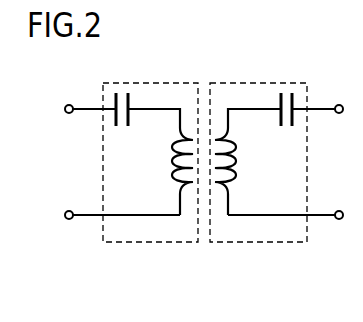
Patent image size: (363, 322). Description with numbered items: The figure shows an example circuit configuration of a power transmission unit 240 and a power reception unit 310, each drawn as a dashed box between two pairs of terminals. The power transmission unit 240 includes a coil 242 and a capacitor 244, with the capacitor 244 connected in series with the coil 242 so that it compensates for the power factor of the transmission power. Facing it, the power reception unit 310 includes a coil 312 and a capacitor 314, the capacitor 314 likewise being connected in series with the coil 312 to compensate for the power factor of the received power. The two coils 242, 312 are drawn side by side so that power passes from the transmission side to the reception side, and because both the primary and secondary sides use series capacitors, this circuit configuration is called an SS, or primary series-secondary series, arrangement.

The power transmission unit 240 is at (176, 83).
The coil 242 is at (167, 184).
The capacitor 244 is at (130, 100).
The power reception unit 310 is at (237, 83).
The coil 312 is at (238, 178).
The capacitor 314 is at (280, 100).